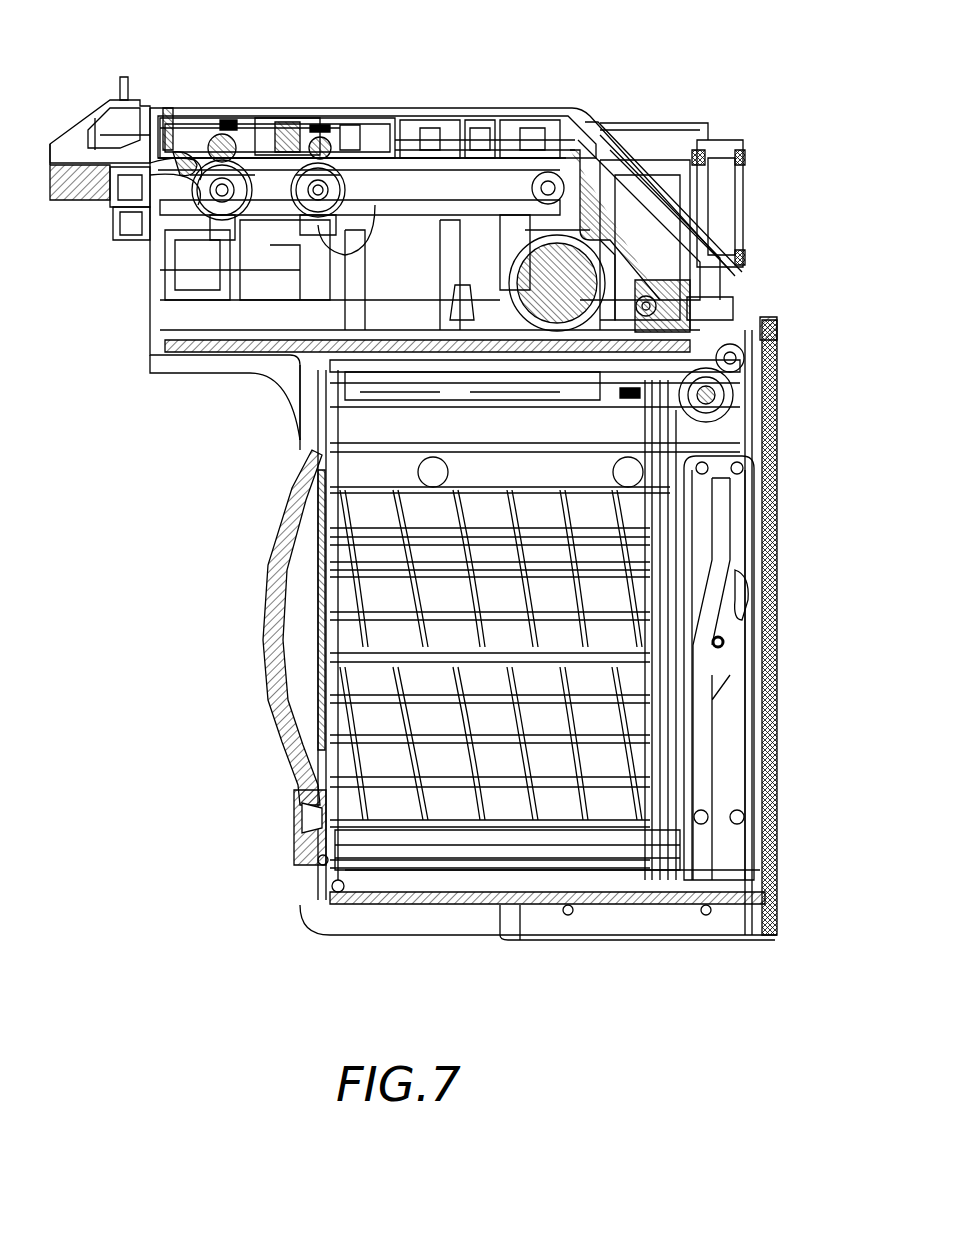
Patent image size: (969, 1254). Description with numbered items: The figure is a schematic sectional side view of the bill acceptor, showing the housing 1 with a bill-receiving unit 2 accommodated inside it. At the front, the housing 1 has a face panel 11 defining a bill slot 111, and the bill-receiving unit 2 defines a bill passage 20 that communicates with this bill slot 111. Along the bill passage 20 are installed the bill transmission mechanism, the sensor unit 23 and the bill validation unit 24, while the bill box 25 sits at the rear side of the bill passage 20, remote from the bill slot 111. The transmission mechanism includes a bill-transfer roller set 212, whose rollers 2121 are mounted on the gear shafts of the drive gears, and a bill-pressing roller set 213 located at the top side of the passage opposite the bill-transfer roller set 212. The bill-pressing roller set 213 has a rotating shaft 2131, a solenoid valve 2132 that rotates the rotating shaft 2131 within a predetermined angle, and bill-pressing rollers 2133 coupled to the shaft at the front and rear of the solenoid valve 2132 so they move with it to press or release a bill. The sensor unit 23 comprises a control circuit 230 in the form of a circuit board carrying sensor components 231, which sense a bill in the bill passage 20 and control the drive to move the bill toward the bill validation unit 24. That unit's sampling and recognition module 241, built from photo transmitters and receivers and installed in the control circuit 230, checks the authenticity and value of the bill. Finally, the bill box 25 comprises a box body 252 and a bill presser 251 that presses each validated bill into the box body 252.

The housing 1 is at (128, 366).
The bill-receiving unit 2 is at (588, 100).
The face panel 11 is at (52, 187).
The bill slot 111 is at (70, 150).
The bill passage 20 is at (390, 150).
The sensor unit 23 is at (458, 58).
The bill validation unit 24 is at (505, 128).
The bill box 25 is at (276, 770).
The bill-transfer roller set 212 is at (358, 215).
The bill-pressing roller set 213 is at (380, 70).
The control circuit 230 is at (470, 150).
The sensor components 231 is at (200, 150).
The sampling and recognition module 241 is at (490, 130).
The bill presser 251 is at (718, 835).
The box body 252 is at (432, 850).
The rollers 2121 is at (220, 210).
The rotating shaft 2131 is at (345, 138).
The solenoid valve 2132 is at (292, 128).
The bill-pressing rollers 2133 is at (214, 135).